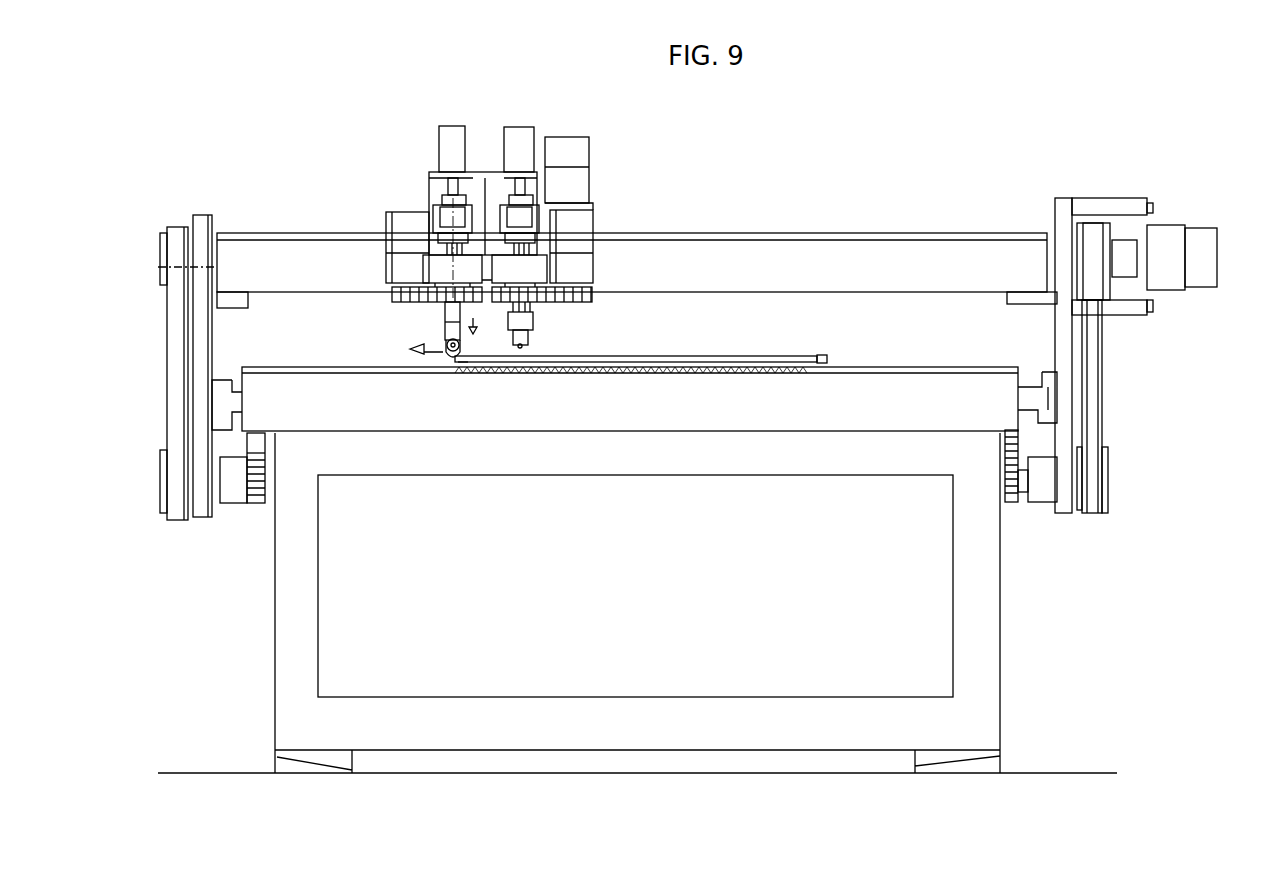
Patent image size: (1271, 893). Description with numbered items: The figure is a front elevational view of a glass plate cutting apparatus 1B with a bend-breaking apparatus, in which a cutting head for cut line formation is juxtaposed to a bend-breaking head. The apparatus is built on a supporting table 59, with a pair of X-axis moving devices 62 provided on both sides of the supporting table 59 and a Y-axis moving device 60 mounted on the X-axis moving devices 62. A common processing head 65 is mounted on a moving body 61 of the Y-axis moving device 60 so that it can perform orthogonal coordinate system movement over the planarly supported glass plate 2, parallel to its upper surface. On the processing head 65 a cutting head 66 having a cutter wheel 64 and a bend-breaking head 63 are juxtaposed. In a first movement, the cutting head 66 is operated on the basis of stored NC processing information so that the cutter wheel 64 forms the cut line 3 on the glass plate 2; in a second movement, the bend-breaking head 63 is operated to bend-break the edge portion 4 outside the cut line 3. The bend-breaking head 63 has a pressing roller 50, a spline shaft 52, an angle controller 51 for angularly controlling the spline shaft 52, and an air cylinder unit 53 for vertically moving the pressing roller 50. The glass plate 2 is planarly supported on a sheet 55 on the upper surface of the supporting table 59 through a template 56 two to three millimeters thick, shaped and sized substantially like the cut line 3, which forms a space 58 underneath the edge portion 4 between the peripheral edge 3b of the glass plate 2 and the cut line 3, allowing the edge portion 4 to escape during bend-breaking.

The glass plate cutting apparatus 1B is at (947, 207).
The glass plate 2 is at (610, 358).
The cut line 3 is at (462, 362).
The peripheral edge 3b is at (830, 360).
The edge portion 4 is at (450, 360).
The pressing roller 50 is at (440, 354).
The angle controller 51 is at (433, 272).
The spline shaft 52 is at (443, 313).
The air cylinder unit 53 is at (450, 150).
The sheet 55 is at (907, 366).
The template 56 is at (570, 372).
The space 58 is at (463, 365).
The supporting table 59 is at (655, 398).
The Y-axis moving device 60 is at (780, 257).
The moving body 61 is at (592, 250).
The X-axis moving device 62 is at (210, 415).
The bend-breaking head 63 is at (423, 270).
The cutter wheel 64 is at (530, 330).
The processing head 65 is at (483, 193).
The cutting head 66 is at (530, 230).